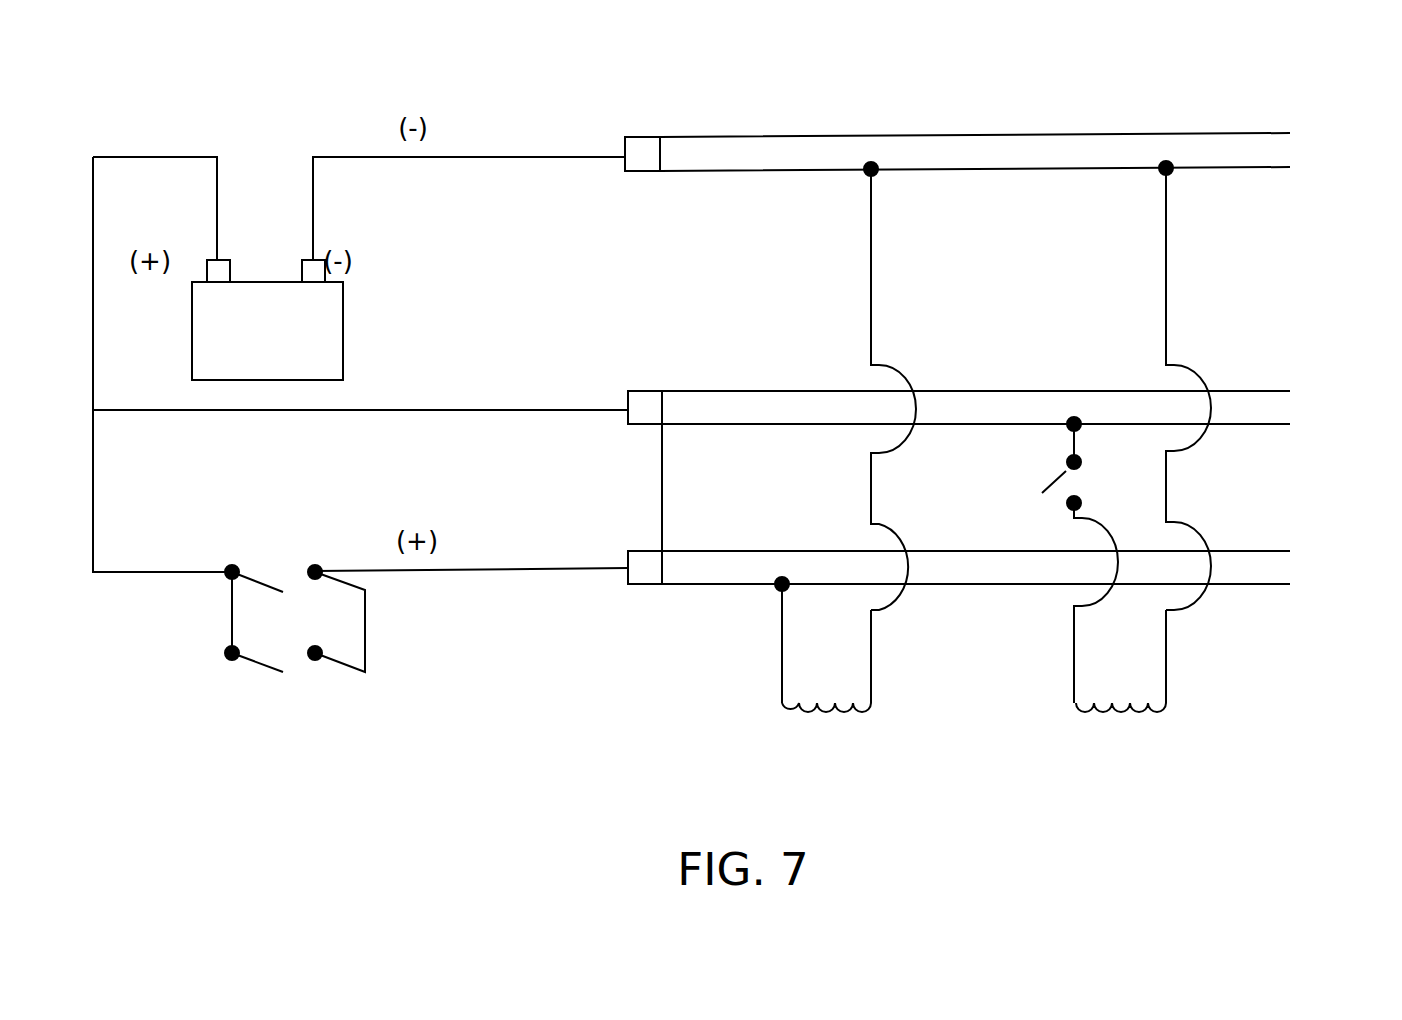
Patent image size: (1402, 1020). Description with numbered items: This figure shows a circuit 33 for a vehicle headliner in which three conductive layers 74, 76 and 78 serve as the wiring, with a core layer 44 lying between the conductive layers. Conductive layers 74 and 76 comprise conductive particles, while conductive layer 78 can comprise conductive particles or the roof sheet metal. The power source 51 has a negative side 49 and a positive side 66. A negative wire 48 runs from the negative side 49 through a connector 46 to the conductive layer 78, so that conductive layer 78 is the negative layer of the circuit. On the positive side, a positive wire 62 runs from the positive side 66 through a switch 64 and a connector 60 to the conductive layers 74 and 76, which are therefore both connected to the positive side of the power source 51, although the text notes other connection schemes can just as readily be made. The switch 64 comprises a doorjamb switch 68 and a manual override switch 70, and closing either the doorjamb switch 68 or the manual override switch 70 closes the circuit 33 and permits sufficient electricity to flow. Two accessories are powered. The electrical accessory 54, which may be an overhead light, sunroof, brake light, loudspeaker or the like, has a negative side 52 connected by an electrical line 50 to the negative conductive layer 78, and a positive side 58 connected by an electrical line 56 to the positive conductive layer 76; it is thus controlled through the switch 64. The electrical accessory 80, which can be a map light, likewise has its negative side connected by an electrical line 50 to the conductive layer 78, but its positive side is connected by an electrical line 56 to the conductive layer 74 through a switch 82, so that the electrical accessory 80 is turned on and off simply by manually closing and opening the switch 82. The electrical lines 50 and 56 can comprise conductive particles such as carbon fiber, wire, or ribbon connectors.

The circuit 33 is at (467, 688).
The core layer 44 is at (1258, 492).
The connector 46 is at (640, 132).
The negative wire 48 is at (568, 147).
The negative side of power source 49 is at (297, 252).
The electrical line 50 is at (862, 255).
The power source 51 is at (282, 348).
The negative side of electrical accessory 52 is at (886, 700).
The electrical accessory 54 is at (830, 723).
The electrical line 56 is at (775, 637).
The positive side of electrical accessory 58 is at (775, 704).
The connector 60 is at (633, 596).
The positive wire 62 is at (572, 560).
The switch 64 is at (223, 615).
The positive side of power source 66 is at (237, 252).
The doorjamb switch 68 is at (258, 570).
The manual override switch 70 is at (262, 676).
The conductive layer 74 is at (1258, 405).
The conductive layer 76 is at (1258, 567).
The conductive layer 78 is at (1255, 150).
The electrical accessory 80 is at (1122, 723).
The switch 82 is at (1050, 477).